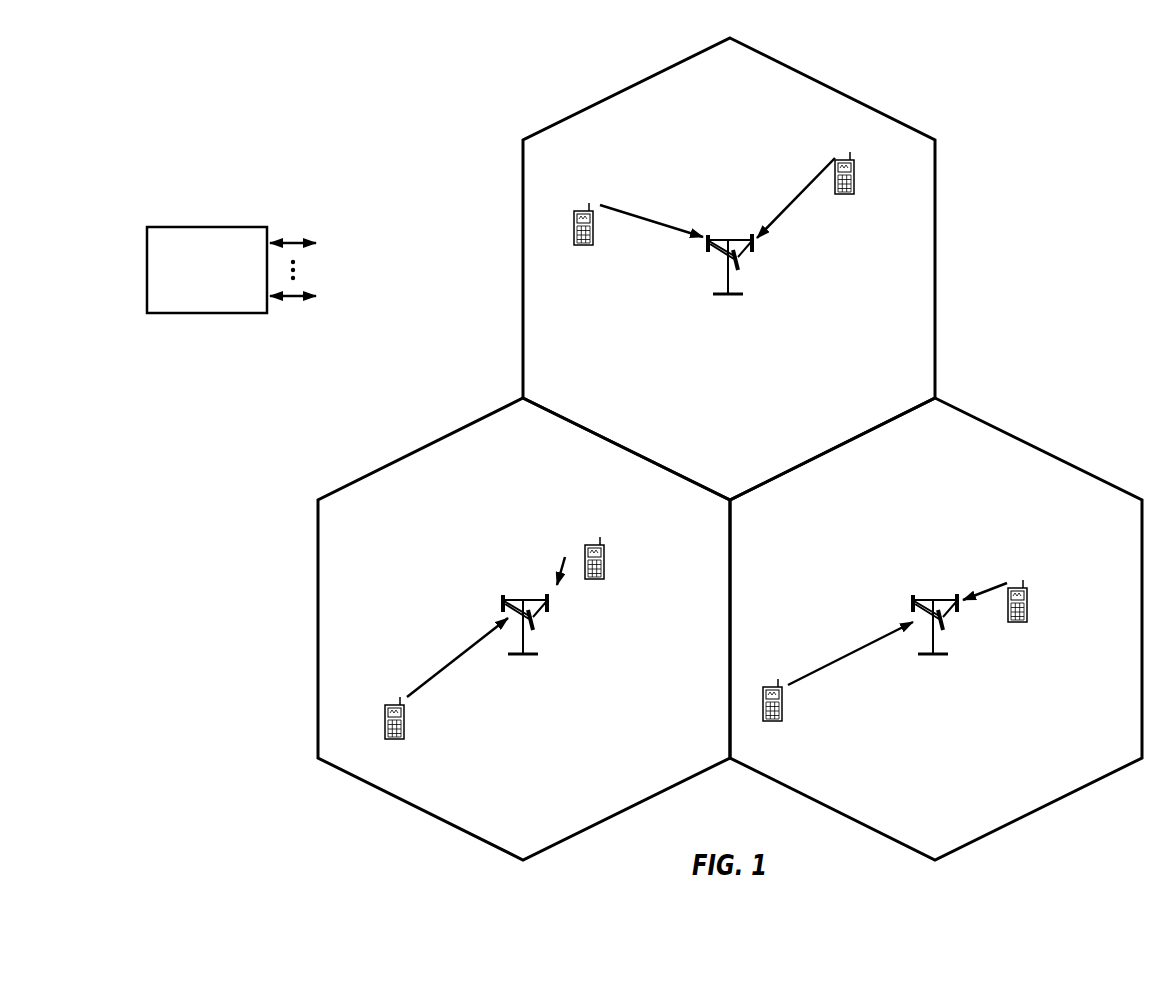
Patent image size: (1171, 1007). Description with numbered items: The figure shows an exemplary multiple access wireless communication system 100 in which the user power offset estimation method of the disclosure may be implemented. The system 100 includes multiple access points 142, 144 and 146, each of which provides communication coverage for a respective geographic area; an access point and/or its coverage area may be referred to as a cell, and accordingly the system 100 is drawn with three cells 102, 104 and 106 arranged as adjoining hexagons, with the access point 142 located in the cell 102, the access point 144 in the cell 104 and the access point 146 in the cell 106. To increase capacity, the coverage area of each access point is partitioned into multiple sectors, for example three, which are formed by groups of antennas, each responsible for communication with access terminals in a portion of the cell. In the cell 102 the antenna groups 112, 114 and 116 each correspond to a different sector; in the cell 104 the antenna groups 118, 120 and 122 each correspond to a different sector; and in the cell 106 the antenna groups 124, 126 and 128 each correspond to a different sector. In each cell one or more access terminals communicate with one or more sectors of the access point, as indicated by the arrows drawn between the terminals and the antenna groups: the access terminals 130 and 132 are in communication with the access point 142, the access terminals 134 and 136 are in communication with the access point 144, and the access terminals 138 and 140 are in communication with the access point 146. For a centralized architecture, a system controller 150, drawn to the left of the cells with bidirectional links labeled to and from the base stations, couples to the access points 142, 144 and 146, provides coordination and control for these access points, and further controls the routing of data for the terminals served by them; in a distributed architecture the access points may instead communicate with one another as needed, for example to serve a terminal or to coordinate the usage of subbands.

The multiple access wireless communication system 100 is at (1096, 85).
The cell 102 is at (936, 629).
The cell 104 is at (524, 629).
The cell 106 is at (729, 269).
The antenna group 112 is at (912, 598).
The antenna group 114 is at (945, 628).
The antenna group 116 is at (958, 608).
The antenna group 118 is at (535, 626).
The antenna group 120 is at (549, 607).
The antenna group 122 is at (503, 600).
The antenna group 124 is at (708, 250).
The antenna group 126 is at (740, 263).
The antenna group 128 is at (753, 250).
The access terminal 130 is at (1013, 588).
The access terminal 132 is at (768, 687).
The access terminal 134 is at (590, 545).
The access terminal 136 is at (389, 705).
The access terminal 138 is at (578, 211).
The access terminal 140 is at (839, 160).
The access point 142 is at (950, 614).
The access point 144 is at (525, 617).
The access point 146 is at (740, 264).
The system controller 150 is at (203, 227).